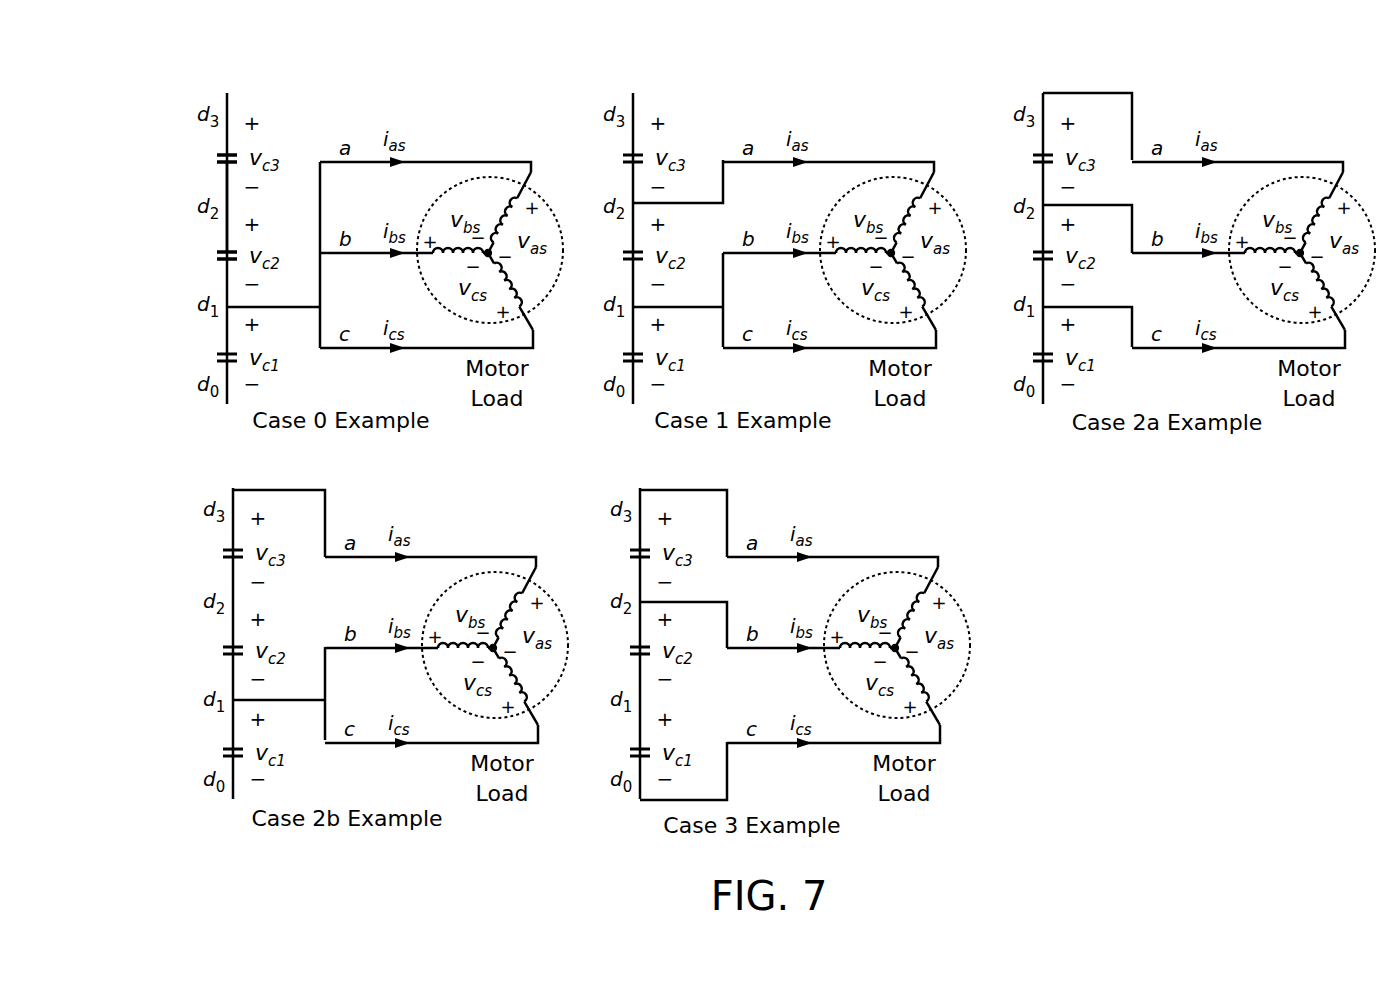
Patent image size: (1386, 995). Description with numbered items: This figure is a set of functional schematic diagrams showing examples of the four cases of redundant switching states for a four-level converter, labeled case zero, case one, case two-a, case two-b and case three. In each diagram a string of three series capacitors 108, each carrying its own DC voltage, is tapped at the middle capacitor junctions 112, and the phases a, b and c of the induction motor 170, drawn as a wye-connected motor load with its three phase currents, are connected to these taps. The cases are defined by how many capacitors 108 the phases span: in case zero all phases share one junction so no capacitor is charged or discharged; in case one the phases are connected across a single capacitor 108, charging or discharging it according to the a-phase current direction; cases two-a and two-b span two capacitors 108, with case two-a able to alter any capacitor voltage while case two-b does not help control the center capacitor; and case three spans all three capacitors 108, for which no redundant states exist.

The capacitor junctions 112 is at (227, 92).
The capacitor 108 is at (215, 162).
The induction motor 170 is at (533, 355).